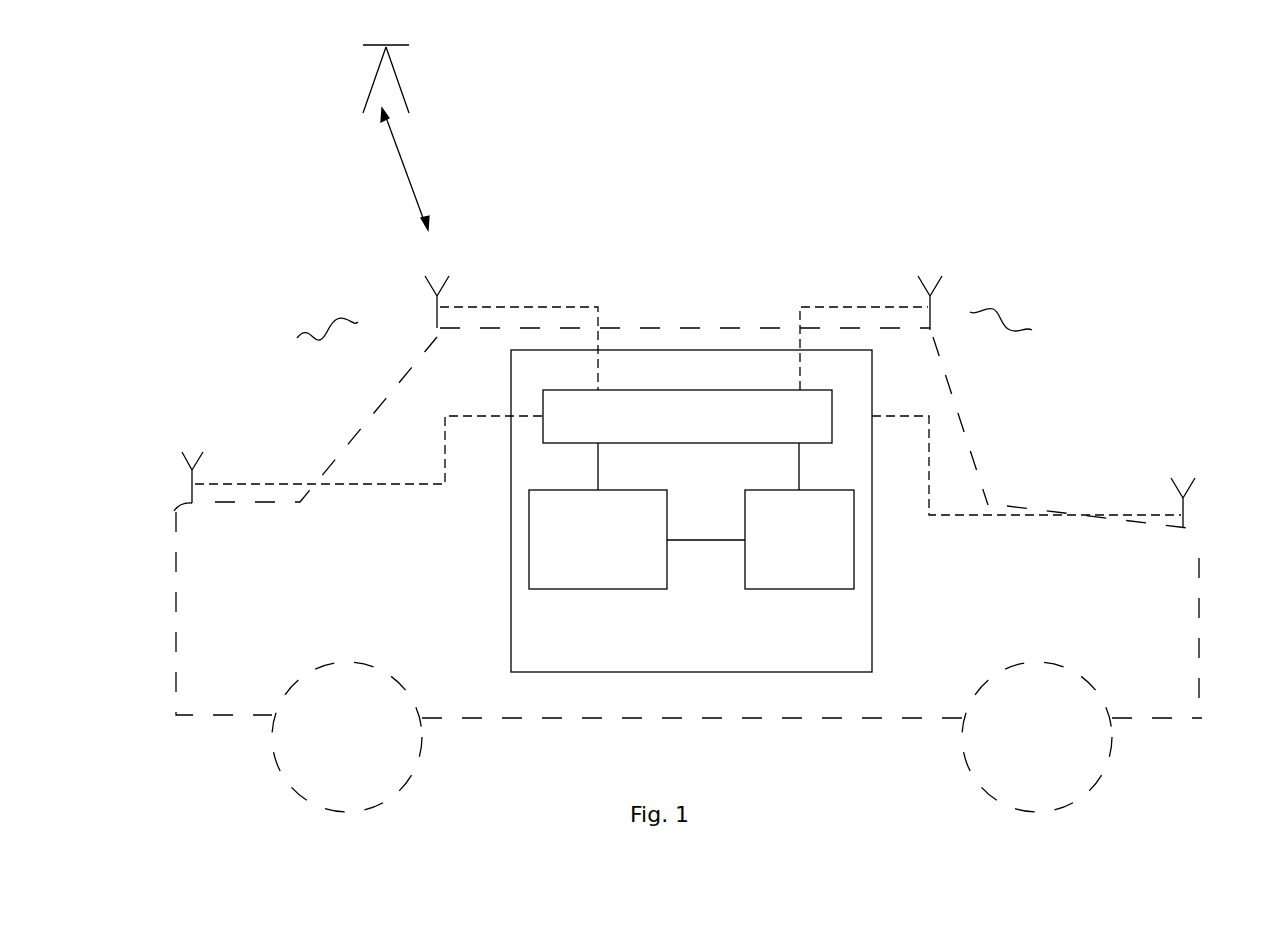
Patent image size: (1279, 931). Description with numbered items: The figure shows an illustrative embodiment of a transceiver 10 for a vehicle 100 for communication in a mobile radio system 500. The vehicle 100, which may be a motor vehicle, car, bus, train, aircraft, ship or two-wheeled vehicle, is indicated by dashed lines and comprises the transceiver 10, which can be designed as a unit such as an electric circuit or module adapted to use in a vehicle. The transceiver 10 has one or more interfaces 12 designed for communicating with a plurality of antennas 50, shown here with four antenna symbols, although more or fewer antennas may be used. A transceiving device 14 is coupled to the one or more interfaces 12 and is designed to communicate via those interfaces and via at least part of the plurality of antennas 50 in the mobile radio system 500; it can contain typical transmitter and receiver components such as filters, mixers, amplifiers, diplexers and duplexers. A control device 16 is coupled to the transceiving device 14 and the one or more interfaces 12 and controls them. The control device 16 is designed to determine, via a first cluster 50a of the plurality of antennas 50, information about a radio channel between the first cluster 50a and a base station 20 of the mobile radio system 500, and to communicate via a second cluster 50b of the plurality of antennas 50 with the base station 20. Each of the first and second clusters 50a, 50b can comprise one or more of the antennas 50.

The transceiver 10 is at (511, 620).
The interfaces 12 is at (722, 445).
The transceiving device 14 is at (598, 592).
The control device 16 is at (800, 592).
The base station 20 is at (366, 108).
The plurality of antennas 50 is at (186, 482).
The first cluster 50a is at (212, 426).
The second cluster 50b is at (1148, 427).
The vehicle 100 is at (205, 718).
The mobile radio system 500 is at (133, 274).